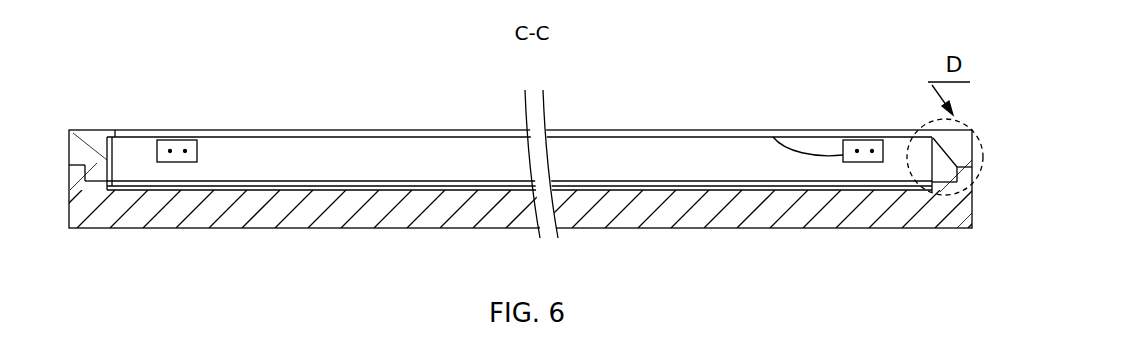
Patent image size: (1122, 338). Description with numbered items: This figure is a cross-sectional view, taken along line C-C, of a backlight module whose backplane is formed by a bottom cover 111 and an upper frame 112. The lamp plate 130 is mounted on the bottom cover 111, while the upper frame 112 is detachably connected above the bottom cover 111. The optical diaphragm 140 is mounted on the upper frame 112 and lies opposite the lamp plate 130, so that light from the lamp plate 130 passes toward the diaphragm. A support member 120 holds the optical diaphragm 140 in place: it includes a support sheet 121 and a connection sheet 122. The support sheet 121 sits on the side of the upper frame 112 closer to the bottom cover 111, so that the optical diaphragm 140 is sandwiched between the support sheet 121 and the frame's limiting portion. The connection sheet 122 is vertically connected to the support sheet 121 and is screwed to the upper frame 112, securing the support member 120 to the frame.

The bottom cover 111 is at (325, 218).
The upper frame 112 is at (82, 145).
The support member 120 is at (821, 106).
The support sheet 121 is at (878, 140).
The connection sheet 122 is at (797, 124).
The lamp plate 130 is at (448, 180).
The optical diaphragm 140 is at (283, 136).